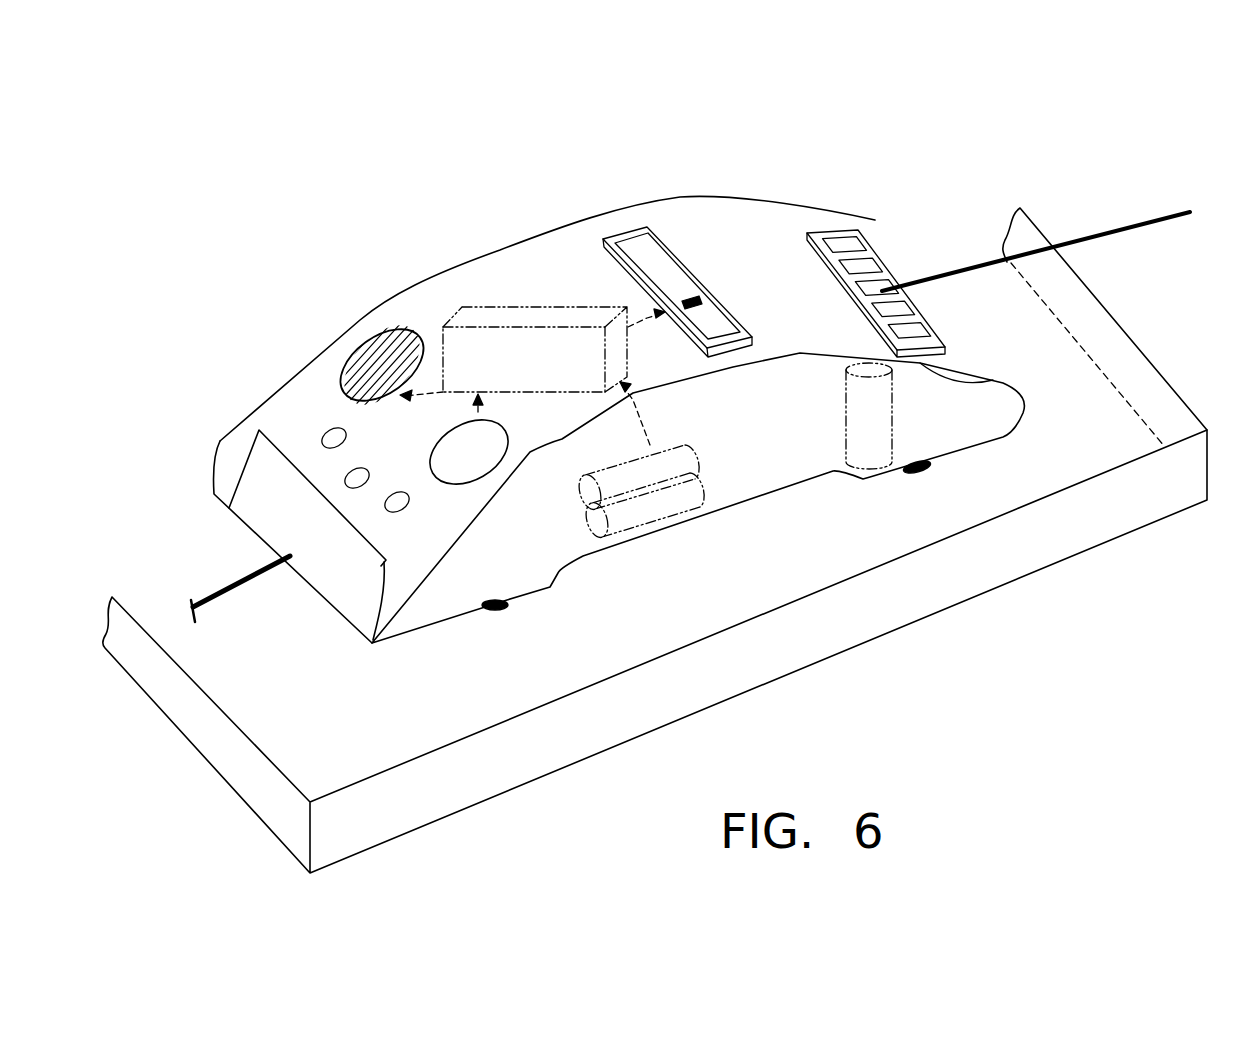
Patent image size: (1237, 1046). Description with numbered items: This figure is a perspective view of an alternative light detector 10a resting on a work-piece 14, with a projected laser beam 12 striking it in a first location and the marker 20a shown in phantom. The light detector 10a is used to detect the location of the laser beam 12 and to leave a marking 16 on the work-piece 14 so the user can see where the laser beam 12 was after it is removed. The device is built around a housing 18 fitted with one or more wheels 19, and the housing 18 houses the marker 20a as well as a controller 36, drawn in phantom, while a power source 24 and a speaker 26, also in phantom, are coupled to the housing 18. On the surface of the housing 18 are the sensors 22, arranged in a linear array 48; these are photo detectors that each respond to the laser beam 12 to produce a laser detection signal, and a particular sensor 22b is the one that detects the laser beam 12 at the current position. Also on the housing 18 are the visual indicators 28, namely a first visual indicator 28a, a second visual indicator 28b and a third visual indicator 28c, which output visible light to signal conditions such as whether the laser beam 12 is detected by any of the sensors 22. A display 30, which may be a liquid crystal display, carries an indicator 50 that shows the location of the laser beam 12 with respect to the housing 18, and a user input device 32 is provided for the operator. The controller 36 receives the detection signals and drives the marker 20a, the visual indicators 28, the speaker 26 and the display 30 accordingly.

The light detector 10a is at (796, 114).
The laser beam 12 is at (1100, 232).
The work-piece 14 is at (853, 650).
The marking 16 is at (223, 600).
The housing 18 is at (777, 477).
The wheels 19 is at (500, 612).
The marker 20a is at (853, 449).
The sensors 22 is at (868, 277).
The sensor 22b is at (921, 257).
The power source 24 is at (653, 517).
The speaker 26 is at (367, 340).
The visual indicators 28 is at (271, 437).
The first visual indicator 28a is at (325, 435).
The second visual indicator 28b is at (345, 482).
The third visual indicator 28c is at (393, 508).
The display 30 is at (632, 229).
The user input device 32 is at (470, 465).
The controller 36 is at (472, 305).
The linear array 48 is at (993, 380).
The indicator 50 is at (690, 297).